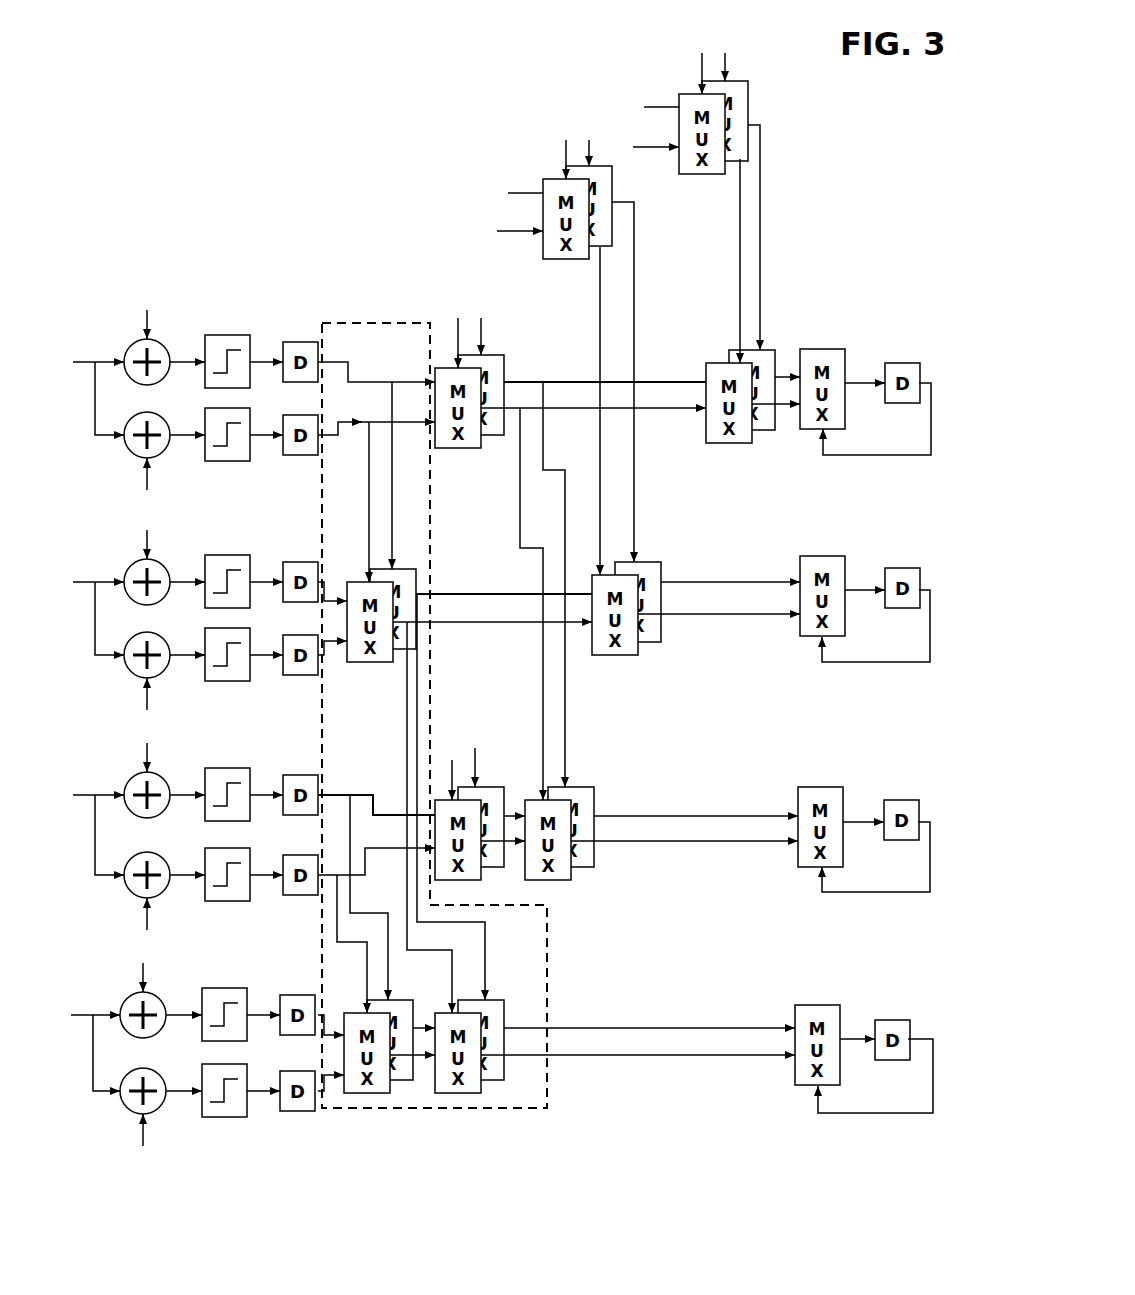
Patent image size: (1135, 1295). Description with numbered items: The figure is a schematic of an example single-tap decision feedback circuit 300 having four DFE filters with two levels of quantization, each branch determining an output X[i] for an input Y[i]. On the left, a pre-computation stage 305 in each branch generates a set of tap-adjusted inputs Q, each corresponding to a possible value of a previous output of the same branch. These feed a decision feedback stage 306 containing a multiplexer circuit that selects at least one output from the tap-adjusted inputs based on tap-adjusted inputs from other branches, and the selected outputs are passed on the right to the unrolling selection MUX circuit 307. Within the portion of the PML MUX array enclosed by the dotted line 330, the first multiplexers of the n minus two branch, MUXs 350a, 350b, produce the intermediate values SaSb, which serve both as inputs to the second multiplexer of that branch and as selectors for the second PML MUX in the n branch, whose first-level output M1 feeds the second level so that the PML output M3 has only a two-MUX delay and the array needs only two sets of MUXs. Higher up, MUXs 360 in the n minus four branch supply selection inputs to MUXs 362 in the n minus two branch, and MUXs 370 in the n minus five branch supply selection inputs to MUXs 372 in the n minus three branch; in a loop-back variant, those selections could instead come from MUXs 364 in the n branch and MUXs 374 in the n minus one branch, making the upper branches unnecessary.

The single-tap circuit 300 is at (205, 98).
The pre-computation stage 305 is at (332, 1172).
The decision feedback stage 306 is at (338, 1172).
The unrolling selection MUX circuit 307 is at (933, 1142).
The dotted line 330 is at (372, 323).
The MUX 350a is at (403, 575).
The MUX 350b is at (385, 655).
The MUXs 360 is at (532, 167).
The MUXs 362 is at (655, 660).
The MUXs 364 is at (363, 1098).
The MUXs 370 is at (680, 82).
The MUXs 372 is at (722, 343).
The MUXs 374 is at (495, 778).
The PML output M1 is at (425, 1067).
The PML output M3 is at (523, 1065).
The intermediate values Sa, Sb SaSb is at (325, 725).